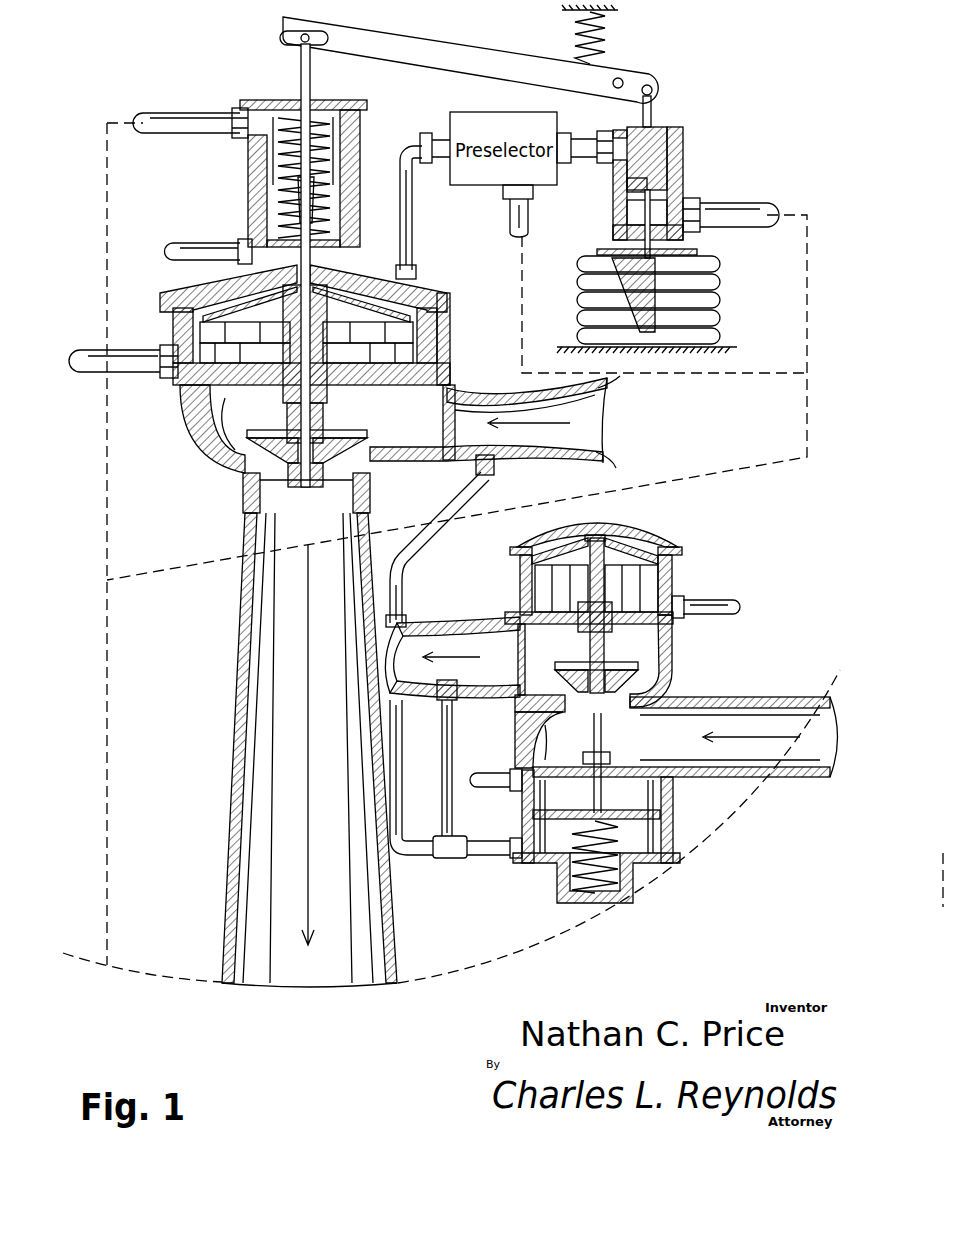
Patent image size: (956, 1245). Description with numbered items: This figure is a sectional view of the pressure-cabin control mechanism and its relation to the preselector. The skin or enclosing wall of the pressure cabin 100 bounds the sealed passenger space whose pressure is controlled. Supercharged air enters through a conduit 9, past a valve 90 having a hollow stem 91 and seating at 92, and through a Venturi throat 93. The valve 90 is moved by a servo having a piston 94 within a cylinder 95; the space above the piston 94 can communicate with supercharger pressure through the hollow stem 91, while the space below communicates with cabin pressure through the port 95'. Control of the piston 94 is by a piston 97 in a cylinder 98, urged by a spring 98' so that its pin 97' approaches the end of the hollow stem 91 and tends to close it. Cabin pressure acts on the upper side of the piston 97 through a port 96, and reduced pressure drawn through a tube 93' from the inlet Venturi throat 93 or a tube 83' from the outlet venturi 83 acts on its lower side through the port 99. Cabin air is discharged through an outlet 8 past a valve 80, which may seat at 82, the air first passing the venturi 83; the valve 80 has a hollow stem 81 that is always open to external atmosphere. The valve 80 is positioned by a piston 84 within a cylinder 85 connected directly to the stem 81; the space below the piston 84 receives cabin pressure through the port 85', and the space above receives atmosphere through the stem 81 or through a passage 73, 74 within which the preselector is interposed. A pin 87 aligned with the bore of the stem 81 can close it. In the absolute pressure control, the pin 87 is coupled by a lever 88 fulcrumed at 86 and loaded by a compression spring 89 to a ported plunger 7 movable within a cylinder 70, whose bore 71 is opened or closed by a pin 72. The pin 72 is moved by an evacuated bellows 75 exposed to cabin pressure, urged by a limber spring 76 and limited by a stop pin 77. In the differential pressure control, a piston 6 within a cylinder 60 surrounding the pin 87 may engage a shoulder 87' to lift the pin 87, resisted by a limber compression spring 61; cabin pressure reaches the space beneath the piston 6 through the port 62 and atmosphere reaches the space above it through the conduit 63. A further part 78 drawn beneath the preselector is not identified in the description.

The piston 6 is at (263, 212).
The ported plunger 7 is at (660, 133).
The outlet 8 is at (243, 682).
The conduit 9 is at (773, 722).
The cylinder 60 is at (347, 147).
The limber compression spring 61 is at (278, 152).
The port 62 is at (256, 248).
The conduit 63 is at (260, 118).
The cylinder 70 is at (673, 178).
The port 71 is at (648, 175).
The pin 72 is at (640, 212).
The passage 73 is at (578, 142).
The passage 74 is at (412, 239).
The evacuated Sylphon or bellows 75 is at (718, 282).
The limber spring 76 is at (715, 326).
The stop pin 77 is at (630, 318).
The nozzle 78 is at (507, 220).
The valve 80 is at (245, 450).
The hollow stem 81 is at (320, 422).
The valve seat 82 is at (257, 463).
The venturi 83 is at (495, 411).
The tube 83' is at (441, 549).
The piston 84 is at (357, 303).
The cylinder 85 is at (327, 339).
The port 85' is at (123, 375).
The fulcrum 86 is at (624, 79).
The pin 87 is at (298, 288).
The shoulder 87' is at (344, 202).
The lever 88 is at (437, 52).
The compression spring 89 is at (575, 33).
The valve 90 is at (637, 675).
The hollow stem 91 is at (590, 643).
The seat 92 is at (565, 692).
The Venturi throat 93 is at (452, 639).
The tube 93' is at (431, 768).
The piston 94 is at (623, 548).
The cylinder 95 is at (624, 585).
The port 95' is at (713, 597).
The port 96 is at (522, 788).
The piston 97 is at (623, 816).
The pin 97' is at (616, 763).
The cylinder 98 is at (613, 840).
The spring 98' is at (565, 859).
The port 99 is at (513, 863).
The skin or enclosing wall of the pressure cabin 100 is at (150, 973).